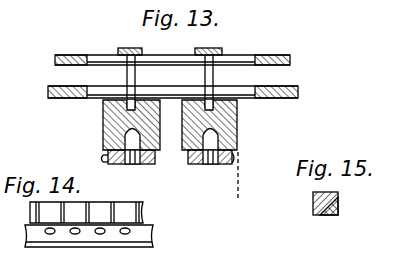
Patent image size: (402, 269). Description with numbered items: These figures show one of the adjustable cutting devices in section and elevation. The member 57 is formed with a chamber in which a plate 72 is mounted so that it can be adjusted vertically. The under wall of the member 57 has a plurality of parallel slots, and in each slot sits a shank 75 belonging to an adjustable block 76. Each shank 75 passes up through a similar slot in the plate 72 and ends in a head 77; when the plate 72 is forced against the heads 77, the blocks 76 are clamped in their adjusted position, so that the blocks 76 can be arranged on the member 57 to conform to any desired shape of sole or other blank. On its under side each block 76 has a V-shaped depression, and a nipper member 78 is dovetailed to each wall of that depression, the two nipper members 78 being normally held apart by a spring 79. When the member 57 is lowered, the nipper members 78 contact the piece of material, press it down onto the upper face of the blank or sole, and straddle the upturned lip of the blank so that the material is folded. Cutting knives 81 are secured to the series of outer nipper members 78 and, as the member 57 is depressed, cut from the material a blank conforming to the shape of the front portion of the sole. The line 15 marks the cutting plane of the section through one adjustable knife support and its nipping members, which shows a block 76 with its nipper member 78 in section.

In FIG. 13, the section line 15 is at (241, 124).
In FIG. 13, the member 57 is at (298, 92).
In FIG. 13, the plate 72 is at (268, 55).
In FIG. 13, the shank 75 is at (137, 78).
In FIG. 13, the adjustable block 76 is at (183, 112).
In FIG. 14, the adjustable block 76 is at (31, 212).
In FIG. 15, the adjustable block 76 is at (338, 203).
In FIG. 13, the head 77 is at (125, 48).
In FIG. 13, the nipper member 78 is at (156, 163).
In FIG. 14, the nipper member 78 is at (28, 231).
In FIG. 15, the nipper member 78 is at (313, 208).
In FIG. 13, the spring 79 is at (132, 160).
In FIG. 13, the cutting knife 81 is at (104, 159).
In FIG. 14, the cutting knife 81 is at (154, 239).